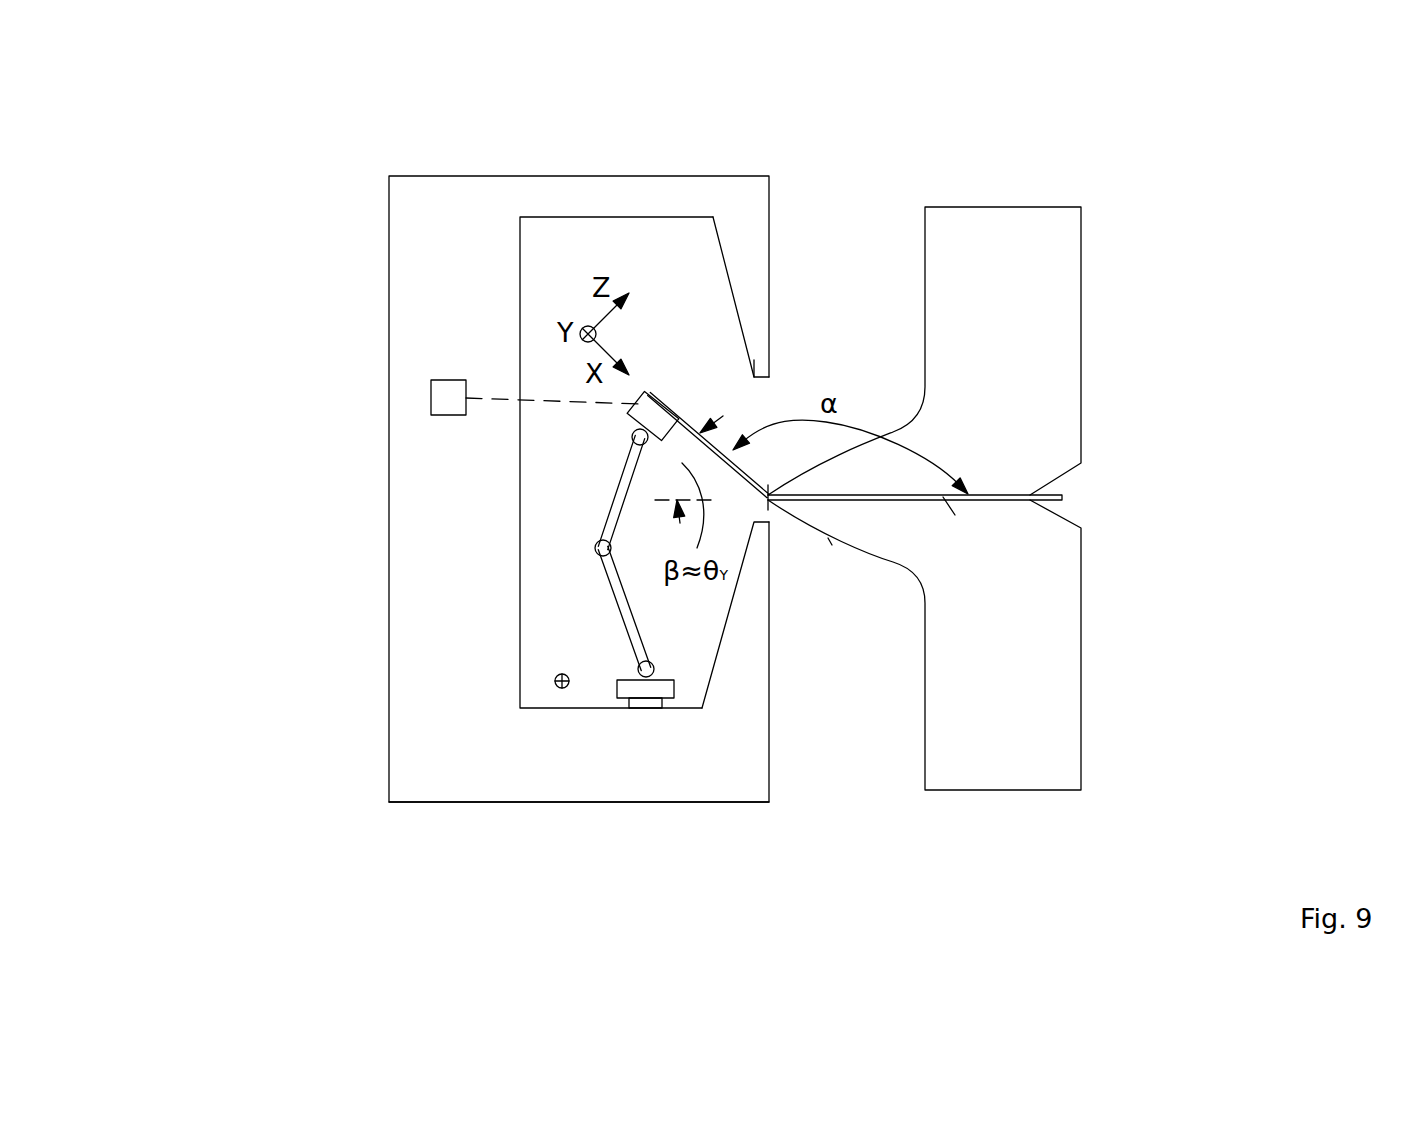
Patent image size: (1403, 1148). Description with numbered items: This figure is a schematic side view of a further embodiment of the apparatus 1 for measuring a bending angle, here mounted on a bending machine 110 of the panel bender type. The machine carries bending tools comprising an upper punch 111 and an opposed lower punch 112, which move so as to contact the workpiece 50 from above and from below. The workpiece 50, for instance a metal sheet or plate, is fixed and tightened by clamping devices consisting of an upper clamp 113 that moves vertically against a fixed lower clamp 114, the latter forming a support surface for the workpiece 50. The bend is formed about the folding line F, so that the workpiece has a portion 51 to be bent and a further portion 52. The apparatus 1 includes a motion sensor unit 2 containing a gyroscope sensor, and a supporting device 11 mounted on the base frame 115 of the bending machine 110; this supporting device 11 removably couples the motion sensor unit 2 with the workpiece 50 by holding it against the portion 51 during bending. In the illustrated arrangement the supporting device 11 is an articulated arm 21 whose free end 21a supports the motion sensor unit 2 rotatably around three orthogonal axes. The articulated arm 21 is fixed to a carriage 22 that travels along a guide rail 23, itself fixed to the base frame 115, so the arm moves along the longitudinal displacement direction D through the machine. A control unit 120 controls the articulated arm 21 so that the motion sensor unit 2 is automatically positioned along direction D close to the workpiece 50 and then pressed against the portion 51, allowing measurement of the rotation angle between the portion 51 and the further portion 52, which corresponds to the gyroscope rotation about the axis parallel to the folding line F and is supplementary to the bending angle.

The bending machine 110 is at (306, 155).
The upper punch 111 is at (753, 295).
The lower punch 112 is at (760, 555).
The portion 51 is at (754, 375).
The base frame 115 is at (553, 755).
The control unit 120 is at (444, 393).
The apparatus 1 is at (682, 382).
The motion sensor unit 2 is at (632, 413).
The free end 21a is at (633, 440).
The articulated arm 21 is at (596, 548).
The carriage 22 is at (628, 688).
The guide rail 23 is at (642, 702).
The supporting device 11 is at (571, 608).
The longitudinal displacement direction D is at (555, 684).
The workpiece 50 is at (1062, 497).
The further portion 52 is at (943, 497).
The upper clamp 113 is at (862, 472).
The lower clamp 114 is at (865, 523).
The folding line F is at (828, 538).